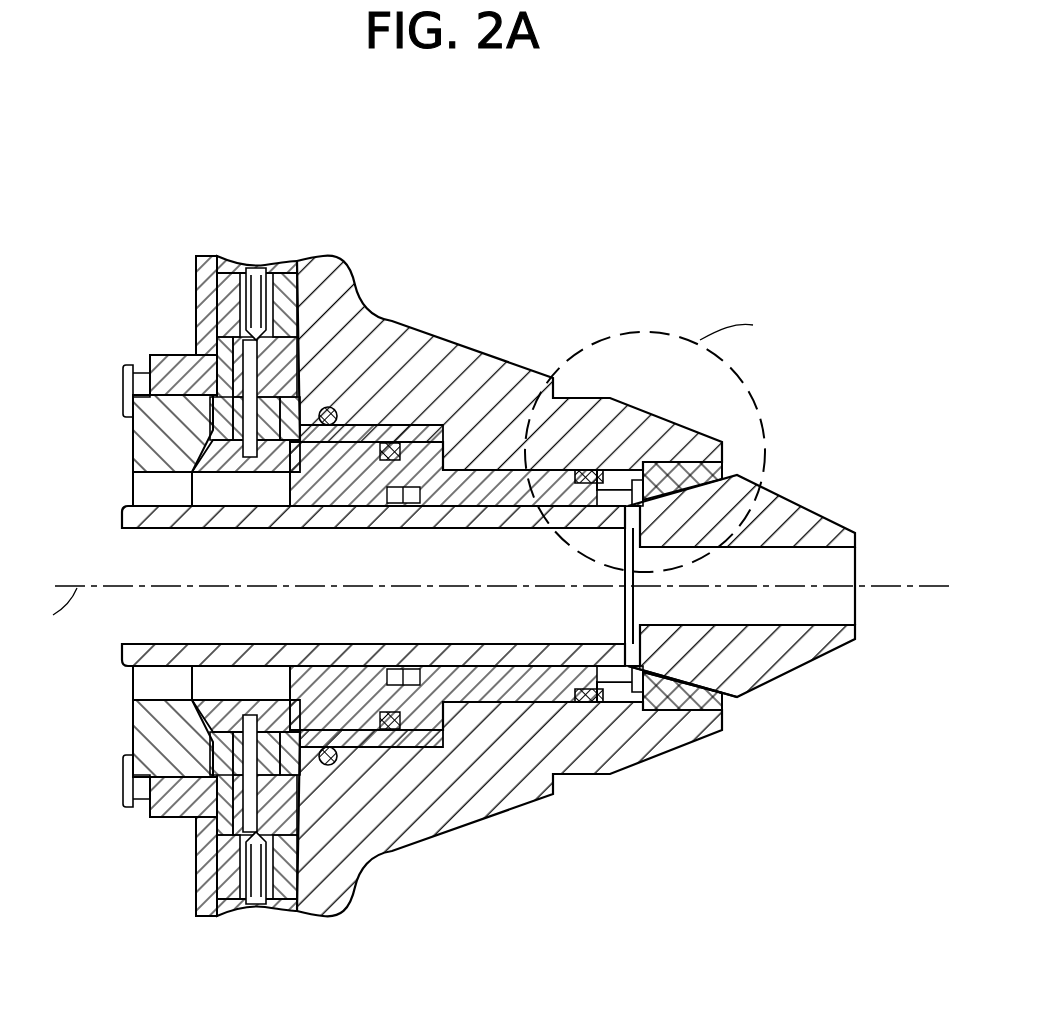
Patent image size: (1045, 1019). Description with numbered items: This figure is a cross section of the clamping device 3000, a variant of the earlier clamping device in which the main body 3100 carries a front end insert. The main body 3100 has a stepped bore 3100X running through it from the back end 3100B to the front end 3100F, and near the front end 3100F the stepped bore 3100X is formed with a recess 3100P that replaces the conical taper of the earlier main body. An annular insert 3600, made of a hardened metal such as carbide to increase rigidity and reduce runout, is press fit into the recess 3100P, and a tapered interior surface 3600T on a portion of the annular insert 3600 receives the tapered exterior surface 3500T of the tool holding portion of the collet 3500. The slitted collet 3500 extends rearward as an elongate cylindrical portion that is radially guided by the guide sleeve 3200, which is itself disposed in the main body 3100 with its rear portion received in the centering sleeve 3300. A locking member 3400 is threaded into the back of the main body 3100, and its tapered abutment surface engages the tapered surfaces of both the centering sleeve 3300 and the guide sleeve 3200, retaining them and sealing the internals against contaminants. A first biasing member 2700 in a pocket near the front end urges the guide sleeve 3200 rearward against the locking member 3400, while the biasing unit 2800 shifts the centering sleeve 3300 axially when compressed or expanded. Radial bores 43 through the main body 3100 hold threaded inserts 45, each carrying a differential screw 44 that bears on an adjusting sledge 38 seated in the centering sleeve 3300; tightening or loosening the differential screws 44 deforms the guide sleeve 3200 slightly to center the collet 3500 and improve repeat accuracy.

The clamping device 3000 is at (488, 534).
The main body 3100 is at (428, 378).
The back end 3100B is at (162, 358).
The stepped bore 3100X is at (470, 420).
The front end 3100F is at (727, 722).
The recess 3100P is at (686, 726).
The guide sleeve 3200 is at (328, 690).
The centering sleeve 3300 is at (365, 427).
The locking member 3400 is at (150, 447).
The collet 3500 is at (798, 516).
The tapered exterior surface 3500T is at (652, 735).
The annular insert 3600 is at (680, 475).
The tapered interior surface 3600T is at (700, 676).
The first biasing member 2700 is at (598, 468).
The biasing unit 2800 is at (340, 760).
The adjusting sledge 38 is at (298, 300).
The radial bore 43 is at (213, 246).
The differential screw 44 is at (236, 300).
The threaded insert 45 is at (285, 295).